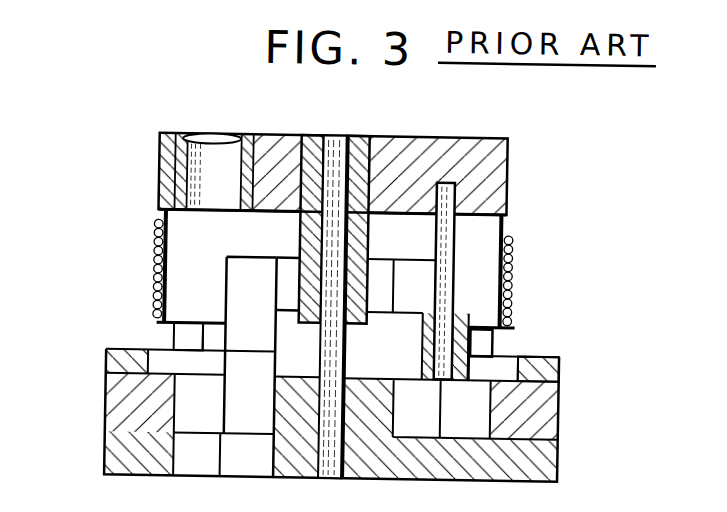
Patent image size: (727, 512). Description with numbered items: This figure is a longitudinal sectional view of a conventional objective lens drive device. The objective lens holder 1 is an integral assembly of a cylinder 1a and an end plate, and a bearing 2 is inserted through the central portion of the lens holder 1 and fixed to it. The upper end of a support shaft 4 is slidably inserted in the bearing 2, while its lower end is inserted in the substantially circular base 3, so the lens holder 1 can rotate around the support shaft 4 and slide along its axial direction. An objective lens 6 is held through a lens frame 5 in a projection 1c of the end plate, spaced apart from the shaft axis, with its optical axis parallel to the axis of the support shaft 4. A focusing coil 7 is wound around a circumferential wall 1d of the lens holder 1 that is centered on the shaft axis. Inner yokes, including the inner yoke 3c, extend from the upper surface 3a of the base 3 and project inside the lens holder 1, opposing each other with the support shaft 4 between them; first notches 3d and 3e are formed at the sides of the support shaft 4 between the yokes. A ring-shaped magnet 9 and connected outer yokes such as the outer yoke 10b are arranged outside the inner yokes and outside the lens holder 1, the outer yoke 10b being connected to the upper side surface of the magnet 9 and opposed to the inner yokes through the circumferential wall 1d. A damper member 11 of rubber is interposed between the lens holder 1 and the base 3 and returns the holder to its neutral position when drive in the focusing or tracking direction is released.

The objective lens holder 1 is at (500, 137).
The cylinder 1a is at (504, 219).
The projection 1c is at (432, 138).
The circumferential wall 1d is at (158, 221).
The bearing 2 is at (354, 145).
The base 3 is at (563, 458).
The upper surface 3a is at (114, 436).
The inner yoke 3c is at (288, 264).
The first notch 3d is at (405, 304).
The first notch 3e is at (253, 303).
The support shaft 4 is at (330, 147).
The lens frame 5 is at (247, 144).
The objective lens 6 is at (220, 139).
The focusing coil 7 is at (512, 265).
The ring-shaped magnet 9 is at (549, 406).
The outer yoke 10b is at (182, 340).
The damper member 11 is at (492, 339).